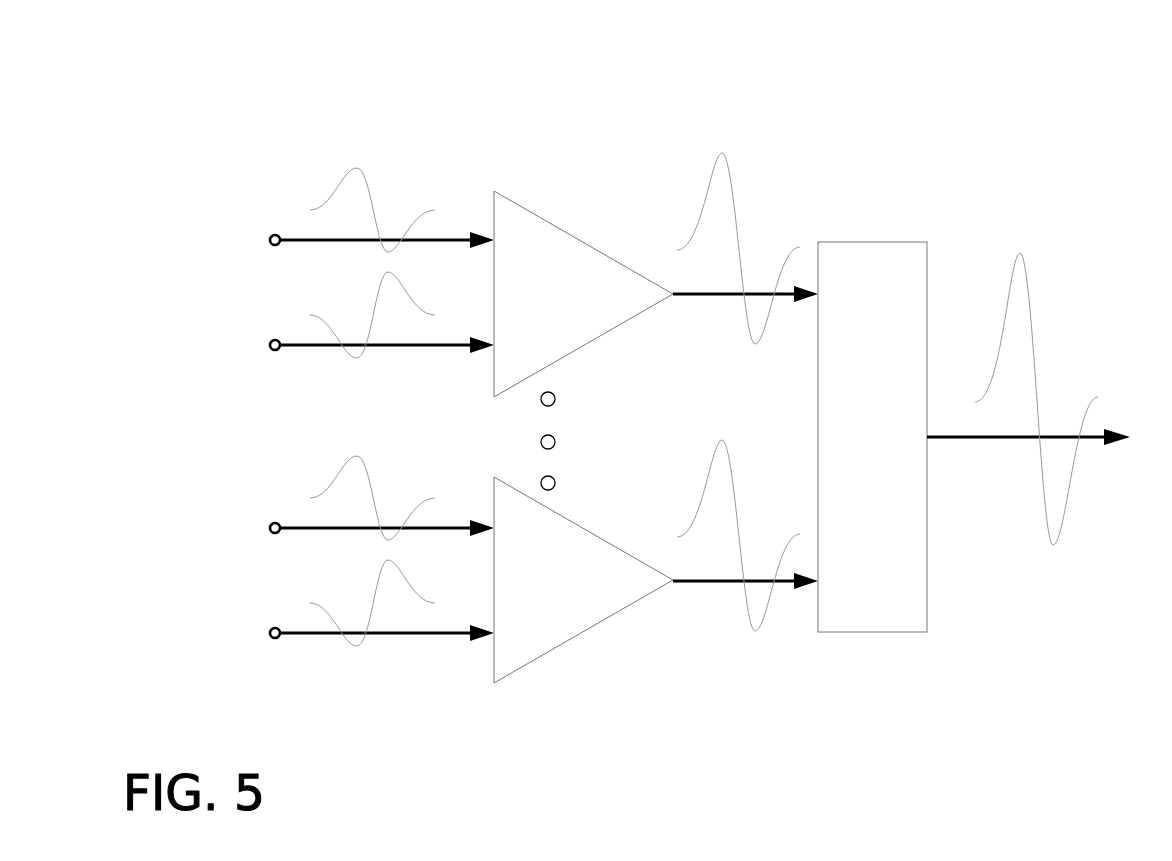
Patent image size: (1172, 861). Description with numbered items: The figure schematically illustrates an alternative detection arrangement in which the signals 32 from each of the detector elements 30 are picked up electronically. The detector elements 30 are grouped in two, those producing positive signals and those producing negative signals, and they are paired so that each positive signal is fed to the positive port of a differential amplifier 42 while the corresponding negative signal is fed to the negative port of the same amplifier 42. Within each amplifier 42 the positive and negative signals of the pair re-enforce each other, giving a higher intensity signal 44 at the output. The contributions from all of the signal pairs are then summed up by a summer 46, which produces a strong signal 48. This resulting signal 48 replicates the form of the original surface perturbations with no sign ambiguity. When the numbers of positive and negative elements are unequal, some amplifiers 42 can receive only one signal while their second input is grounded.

The detector element 30 is at (267, 241).
The signal 32 is at (350, 158).
The differential amplifier 42 is at (567, 227).
The higher intensity signal 44 is at (720, 148).
The summer 46 is at (902, 242).
The strong signal 48 is at (1027, 248).